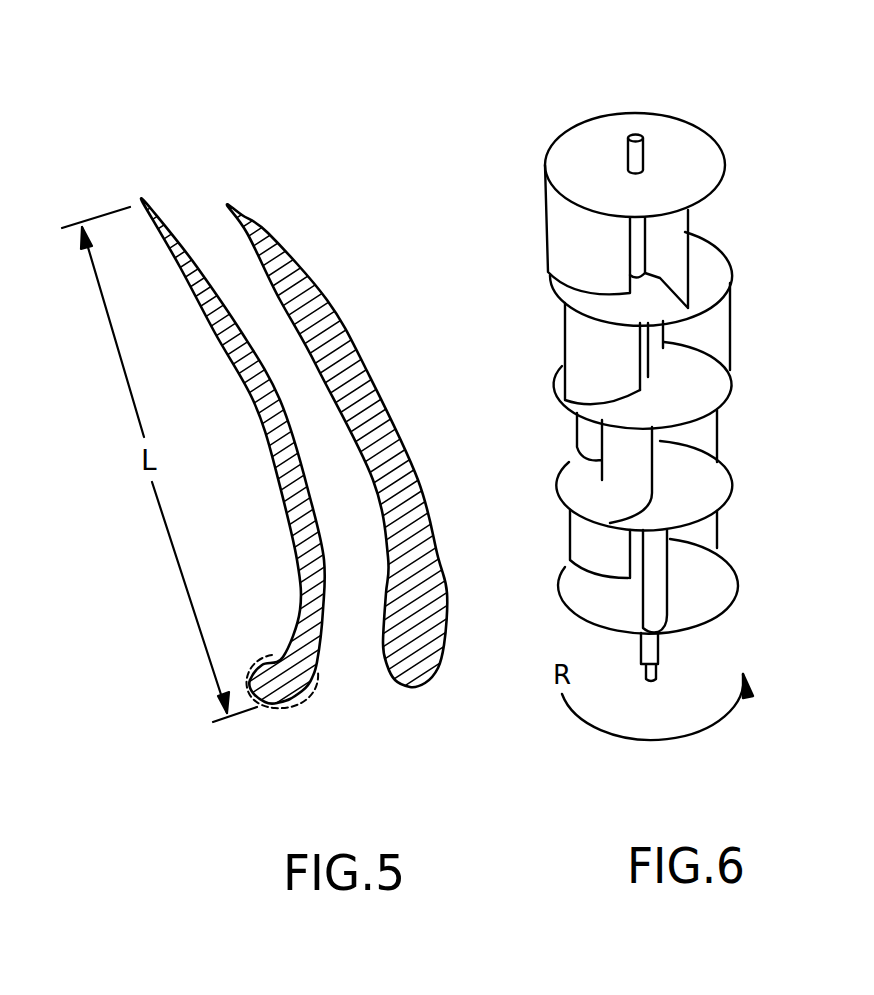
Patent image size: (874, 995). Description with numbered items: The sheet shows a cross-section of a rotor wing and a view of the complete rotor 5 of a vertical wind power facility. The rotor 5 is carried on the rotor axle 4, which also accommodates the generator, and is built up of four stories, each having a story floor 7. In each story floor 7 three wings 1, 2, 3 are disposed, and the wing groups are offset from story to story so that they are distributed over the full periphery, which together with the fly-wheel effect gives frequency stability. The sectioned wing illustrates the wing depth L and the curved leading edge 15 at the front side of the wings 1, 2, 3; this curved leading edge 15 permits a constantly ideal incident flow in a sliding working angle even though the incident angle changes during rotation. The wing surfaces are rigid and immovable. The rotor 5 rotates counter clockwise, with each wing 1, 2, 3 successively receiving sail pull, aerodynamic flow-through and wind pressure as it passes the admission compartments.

In FIG. 5, the wing 1 is at (295, 458).
In FIG. 6, the wing 1 is at (691, 369).
In FIG. 5, the wing 2 is at (295, 458).
In FIG. 5, the wing 3 is at (413, 683).
In FIG. 6, the rotor axle 4 is at (658, 645).
In FIG. 6, the rotor 5 is at (670, 138).
In FIG. 6, the story floor 7 is at (703, 482).
In FIG. 5, the curved leading edge 15 is at (277, 705).